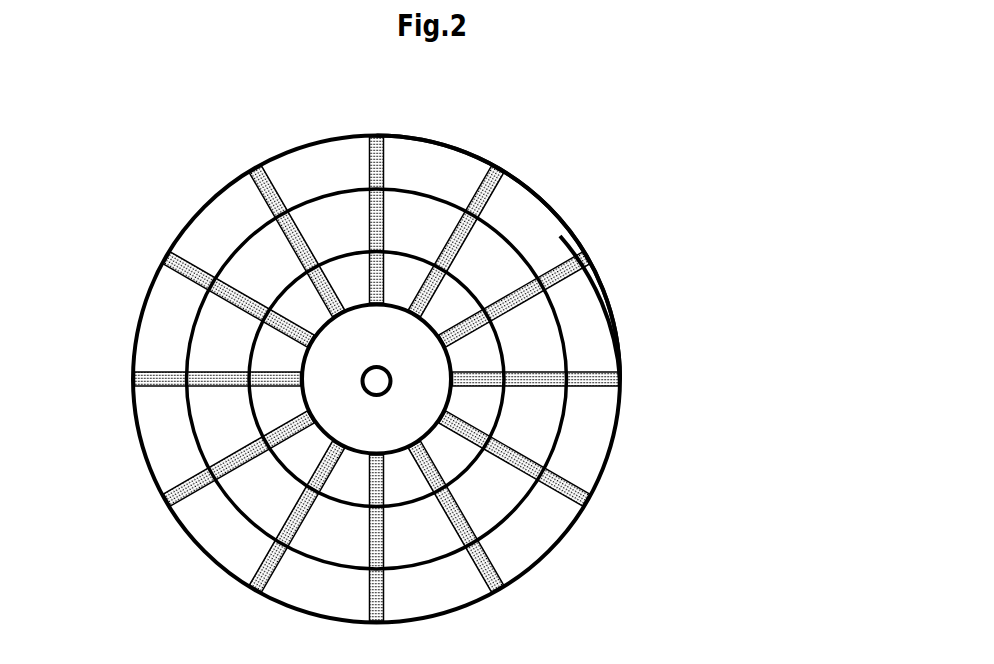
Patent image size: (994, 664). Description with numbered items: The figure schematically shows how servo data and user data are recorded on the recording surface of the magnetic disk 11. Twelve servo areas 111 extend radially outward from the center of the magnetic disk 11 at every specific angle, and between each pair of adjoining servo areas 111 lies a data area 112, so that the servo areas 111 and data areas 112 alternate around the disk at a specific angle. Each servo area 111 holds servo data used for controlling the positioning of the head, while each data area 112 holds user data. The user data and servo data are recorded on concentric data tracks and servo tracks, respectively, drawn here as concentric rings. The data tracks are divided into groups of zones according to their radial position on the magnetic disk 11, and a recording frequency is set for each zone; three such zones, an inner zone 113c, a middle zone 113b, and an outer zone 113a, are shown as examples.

The magnetic disk 11 is at (132, 343).
The servo areas 111 is at (590, 260).
The data areas 112 is at (532, 224).
The zone 113a is at (593, 433).
The zone 113b is at (493, 499).
The zone 113c is at (490, 356).